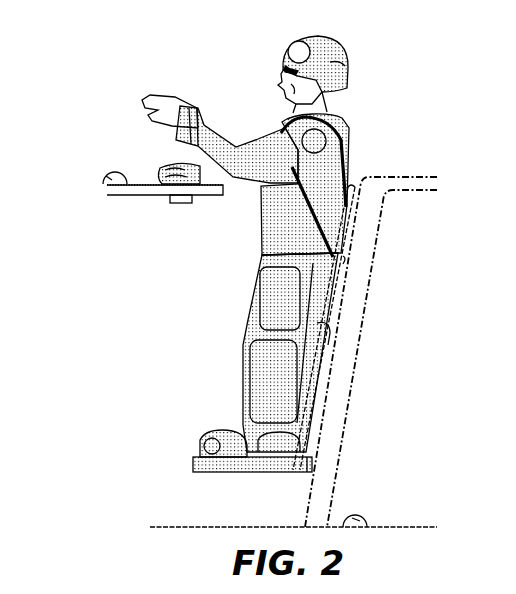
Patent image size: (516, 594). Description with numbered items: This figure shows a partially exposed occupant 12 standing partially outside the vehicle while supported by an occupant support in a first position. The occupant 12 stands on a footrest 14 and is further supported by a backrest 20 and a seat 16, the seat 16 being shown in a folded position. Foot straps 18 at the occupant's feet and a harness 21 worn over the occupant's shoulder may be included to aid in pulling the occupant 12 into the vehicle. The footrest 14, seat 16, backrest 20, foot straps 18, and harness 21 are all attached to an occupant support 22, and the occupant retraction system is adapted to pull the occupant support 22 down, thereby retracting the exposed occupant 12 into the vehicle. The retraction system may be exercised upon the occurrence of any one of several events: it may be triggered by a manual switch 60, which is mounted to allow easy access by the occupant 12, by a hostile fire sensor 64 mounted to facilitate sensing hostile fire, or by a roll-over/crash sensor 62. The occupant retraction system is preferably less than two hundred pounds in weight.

The occupant 12 is at (343, 157).
The footrest 14 is at (228, 467).
The seat 16 is at (340, 305).
The foot straps 18 is at (217, 440).
The backrest 20 is at (366, 177).
The harness 21 is at (338, 128).
The occupant support 22 is at (347, 261).
The manual switch 60 is at (172, 204).
The roll-over/crash sensor 62 is at (355, 516).
The hostile fire sensor 64 is at (105, 172).